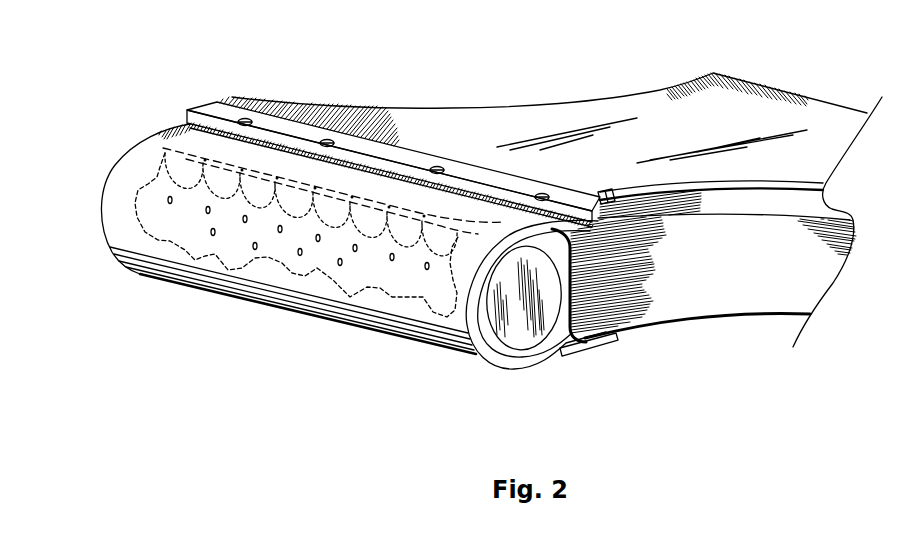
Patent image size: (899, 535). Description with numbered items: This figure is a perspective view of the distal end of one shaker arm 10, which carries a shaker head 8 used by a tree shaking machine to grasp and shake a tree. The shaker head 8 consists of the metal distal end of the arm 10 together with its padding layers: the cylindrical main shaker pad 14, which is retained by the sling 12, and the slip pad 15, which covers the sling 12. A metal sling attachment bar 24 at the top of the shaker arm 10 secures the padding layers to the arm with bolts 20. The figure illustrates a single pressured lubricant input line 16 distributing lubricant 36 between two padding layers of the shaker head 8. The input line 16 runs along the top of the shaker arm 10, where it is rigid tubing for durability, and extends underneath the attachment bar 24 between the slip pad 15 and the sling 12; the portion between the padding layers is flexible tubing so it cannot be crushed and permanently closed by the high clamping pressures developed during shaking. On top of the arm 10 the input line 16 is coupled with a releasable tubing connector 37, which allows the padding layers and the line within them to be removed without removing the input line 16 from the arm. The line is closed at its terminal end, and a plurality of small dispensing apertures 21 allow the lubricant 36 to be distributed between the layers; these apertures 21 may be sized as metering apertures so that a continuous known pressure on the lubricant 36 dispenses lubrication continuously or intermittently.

The shaker head 8 is at (242, 90).
The shaker arm 10 is at (767, 293).
The sling 12 is at (540, 347).
The main shaker pad 14 is at (520, 338).
The slip pad 15 is at (594, 345).
The lubricant input line 16 is at (503, 222).
The bolts 20 is at (328, 137).
The dispensing apertures 21 is at (231, 166).
The sling attachment bar 24 is at (402, 162).
The lubricant 36 is at (250, 238).
The releasable tubing connector 37 is at (608, 205).